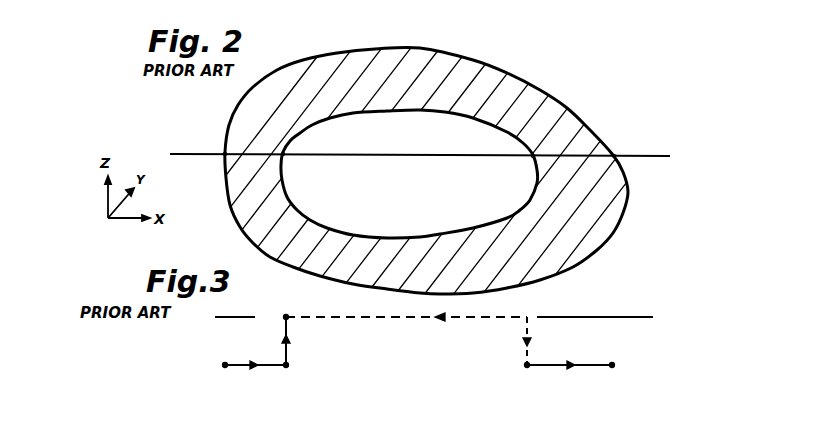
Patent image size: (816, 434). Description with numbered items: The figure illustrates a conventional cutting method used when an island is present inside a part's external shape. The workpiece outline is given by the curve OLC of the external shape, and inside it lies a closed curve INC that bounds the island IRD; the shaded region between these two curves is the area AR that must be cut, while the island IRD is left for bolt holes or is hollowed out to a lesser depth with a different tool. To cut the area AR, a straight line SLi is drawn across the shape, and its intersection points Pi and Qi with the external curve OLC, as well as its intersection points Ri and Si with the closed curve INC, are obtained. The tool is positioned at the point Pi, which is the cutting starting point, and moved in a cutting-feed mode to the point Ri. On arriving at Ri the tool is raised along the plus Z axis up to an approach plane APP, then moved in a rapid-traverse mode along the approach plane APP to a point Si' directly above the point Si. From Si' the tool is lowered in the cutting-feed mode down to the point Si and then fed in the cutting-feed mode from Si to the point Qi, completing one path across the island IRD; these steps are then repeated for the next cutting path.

In FIG. 2, the curve of the external shape OLC is at (567, 107).
In FIG. 2, the closed curve INC is at (443, 116).
In FIG. 2, the island IRD is at (470, 122).
In FIG. 2, the area AR is at (603, 225).
In FIG. 2, the straight line SLi is at (184, 153).
In FIG. 2, the intersection point Qi is at (211, 168).
In FIG. 3, the intersection point Qi is at (250, 375).
In FIG. 2, the intersection point Si is at (295, 166).
In FIG. 3, the intersection point Si is at (288, 377).
In FIG. 2, the intersection point Ri is at (519, 168).
In FIG. 3, the intersection point Ri is at (564, 376).
In FIG. 2, the intersection point Pi is at (625, 144).
In FIG. 3, the intersection point Pi is at (611, 378).
In FIG. 3, the point directly above the point Si Si' is at (296, 327).
In FIG. 3, the approach plane APP is at (640, 317).